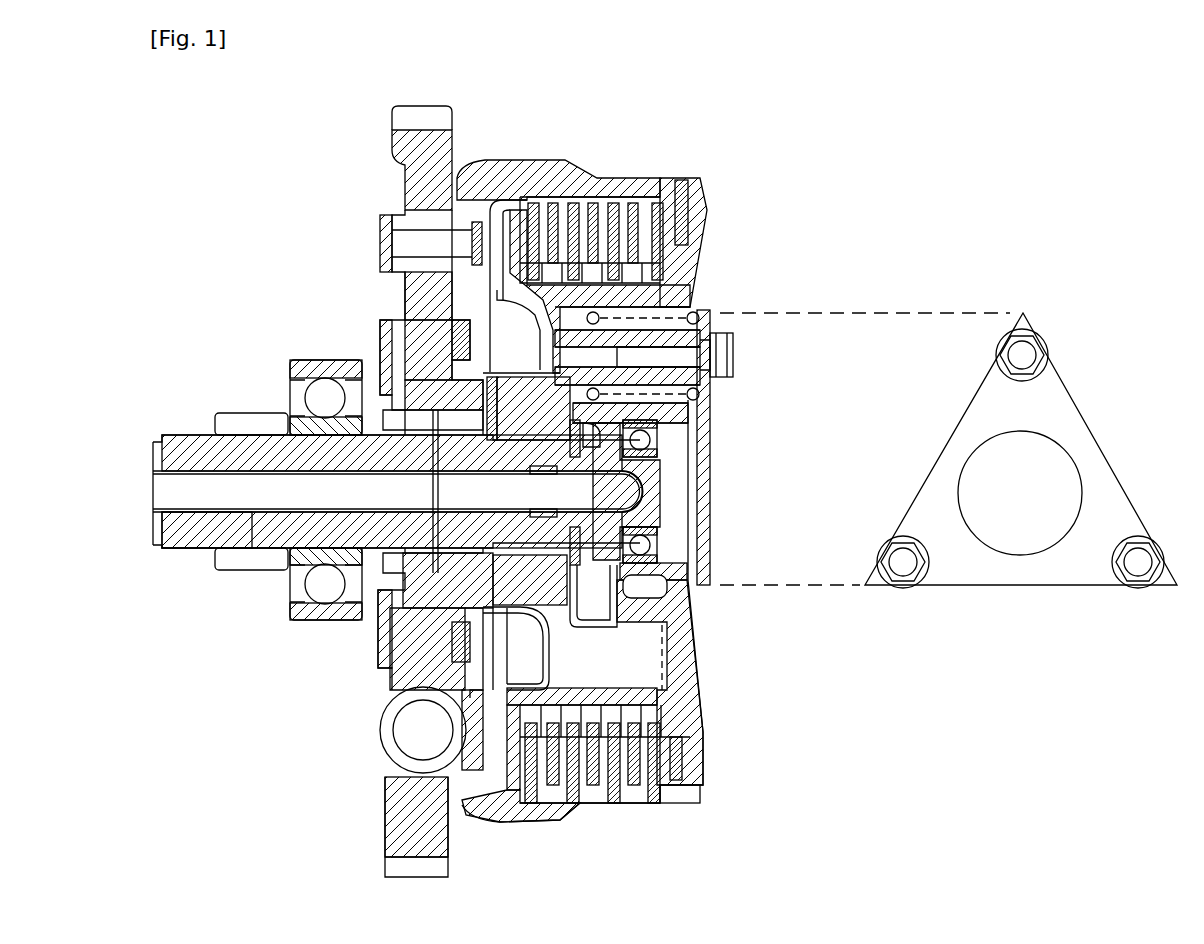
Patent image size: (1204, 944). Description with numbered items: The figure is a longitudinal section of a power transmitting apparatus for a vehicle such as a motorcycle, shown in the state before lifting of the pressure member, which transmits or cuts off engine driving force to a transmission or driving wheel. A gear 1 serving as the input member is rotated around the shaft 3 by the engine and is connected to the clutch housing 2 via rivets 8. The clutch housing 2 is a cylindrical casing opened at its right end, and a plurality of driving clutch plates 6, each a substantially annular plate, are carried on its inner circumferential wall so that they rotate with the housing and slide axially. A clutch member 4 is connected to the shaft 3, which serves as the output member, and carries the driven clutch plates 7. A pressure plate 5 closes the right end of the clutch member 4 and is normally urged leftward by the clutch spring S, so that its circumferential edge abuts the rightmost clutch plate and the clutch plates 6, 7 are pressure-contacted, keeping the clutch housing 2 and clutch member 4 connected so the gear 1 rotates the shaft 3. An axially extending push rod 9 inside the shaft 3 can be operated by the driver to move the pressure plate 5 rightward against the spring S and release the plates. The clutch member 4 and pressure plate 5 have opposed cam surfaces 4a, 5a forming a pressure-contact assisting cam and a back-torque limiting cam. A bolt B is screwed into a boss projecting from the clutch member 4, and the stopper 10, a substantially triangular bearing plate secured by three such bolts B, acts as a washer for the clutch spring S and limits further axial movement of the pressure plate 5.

The gear 1 is at (398, 150).
The clutch housing 2 is at (524, 170).
The shaft 3 is at (184, 450).
The clutch member 4 is at (505, 283).
The cam surface 4a is at (660, 638).
The pressure plate 5 is at (700, 247).
The cam surface 5a is at (648, 672).
The driving clutch plates 6 is at (632, 205).
The driven clutch plates 7 is at (580, 205).
The rivets 8 is at (380, 232).
The push rod 9 is at (195, 500).
The stopper 10 is at (700, 515).
The bolt B is at (735, 352).
The clutch spring S is at (708, 422).